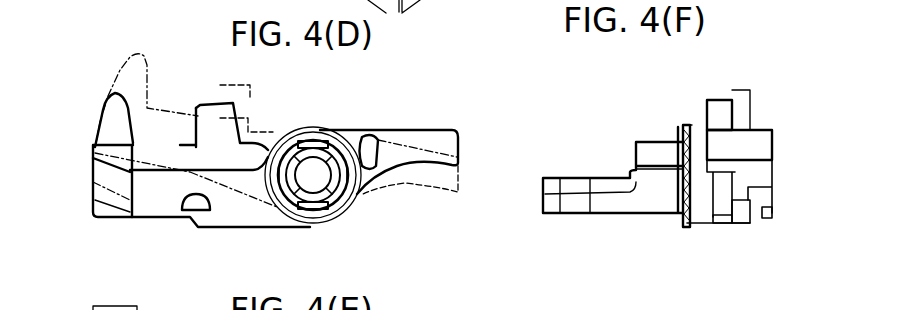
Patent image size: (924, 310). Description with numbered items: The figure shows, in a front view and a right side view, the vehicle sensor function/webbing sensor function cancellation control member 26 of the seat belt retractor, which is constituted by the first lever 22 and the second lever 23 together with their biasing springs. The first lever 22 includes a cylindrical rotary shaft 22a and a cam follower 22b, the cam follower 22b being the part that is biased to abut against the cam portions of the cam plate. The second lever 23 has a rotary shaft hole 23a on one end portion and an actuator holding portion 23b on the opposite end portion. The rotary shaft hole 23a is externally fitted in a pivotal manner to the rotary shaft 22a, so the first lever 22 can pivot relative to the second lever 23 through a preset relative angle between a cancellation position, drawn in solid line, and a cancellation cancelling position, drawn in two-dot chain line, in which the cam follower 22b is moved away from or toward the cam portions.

In FIG. 4D, the first lever 22 is at (182, 147).
In FIG. 4F, the first lever 22 is at (773, 150).
In FIG. 4D, the rotary shaft 22a is at (346, 141).
In FIG. 4D, the cam follower 22b is at (220, 118).
In FIG. 4F, the cam follower 22b is at (717, 100).
In FIG. 4D, the second lever 23 is at (217, 219).
In FIG. 4F, the second lever 23 is at (704, 217).
In FIG. 4D, the rotary shaft hole 23a is at (343, 212).
In FIG. 4F, the rotary shaft hole 23a is at (687, 128).
In FIG. 4D, the actuator holding portion 23b is at (105, 213).
In FIG. 4F, the actuator holding portion 23b is at (598, 207).
In FIG. 4D, the vehicle sensor function/webbing sensor function cancellation control member 26 is at (92, 113).
In FIG. 4F, the vehicle sensor function/webbing sensor function cancellation control member 26 is at (604, 131).